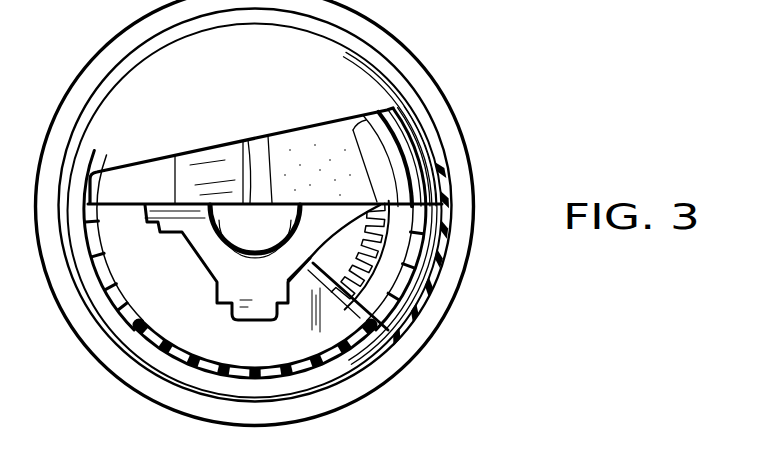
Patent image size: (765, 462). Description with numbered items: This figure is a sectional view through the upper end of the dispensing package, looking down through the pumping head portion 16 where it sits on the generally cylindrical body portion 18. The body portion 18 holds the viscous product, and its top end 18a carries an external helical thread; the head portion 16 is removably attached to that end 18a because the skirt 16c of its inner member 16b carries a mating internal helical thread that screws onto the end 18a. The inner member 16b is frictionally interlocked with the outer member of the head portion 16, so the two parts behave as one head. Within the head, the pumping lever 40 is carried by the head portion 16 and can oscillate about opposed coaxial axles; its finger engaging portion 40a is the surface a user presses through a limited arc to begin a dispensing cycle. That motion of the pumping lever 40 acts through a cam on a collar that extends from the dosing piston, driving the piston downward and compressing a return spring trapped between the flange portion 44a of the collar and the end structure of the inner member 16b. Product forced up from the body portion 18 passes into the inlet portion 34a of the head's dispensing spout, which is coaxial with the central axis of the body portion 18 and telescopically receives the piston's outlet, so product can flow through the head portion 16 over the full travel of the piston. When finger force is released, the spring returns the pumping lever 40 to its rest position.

The pumping head portion 16 is at (393, 108).
The inner member 16b is at (183, 313).
The skirt 16c is at (410, 280).
The body portion 18 is at (450, 222).
The end 18a is at (400, 312).
The inlet portion 34a is at (227, 243).
The pumping lever 40 is at (218, 137).
The finger engaging portion 40a is at (317, 127).
The flange portion 44a is at (268, 270).